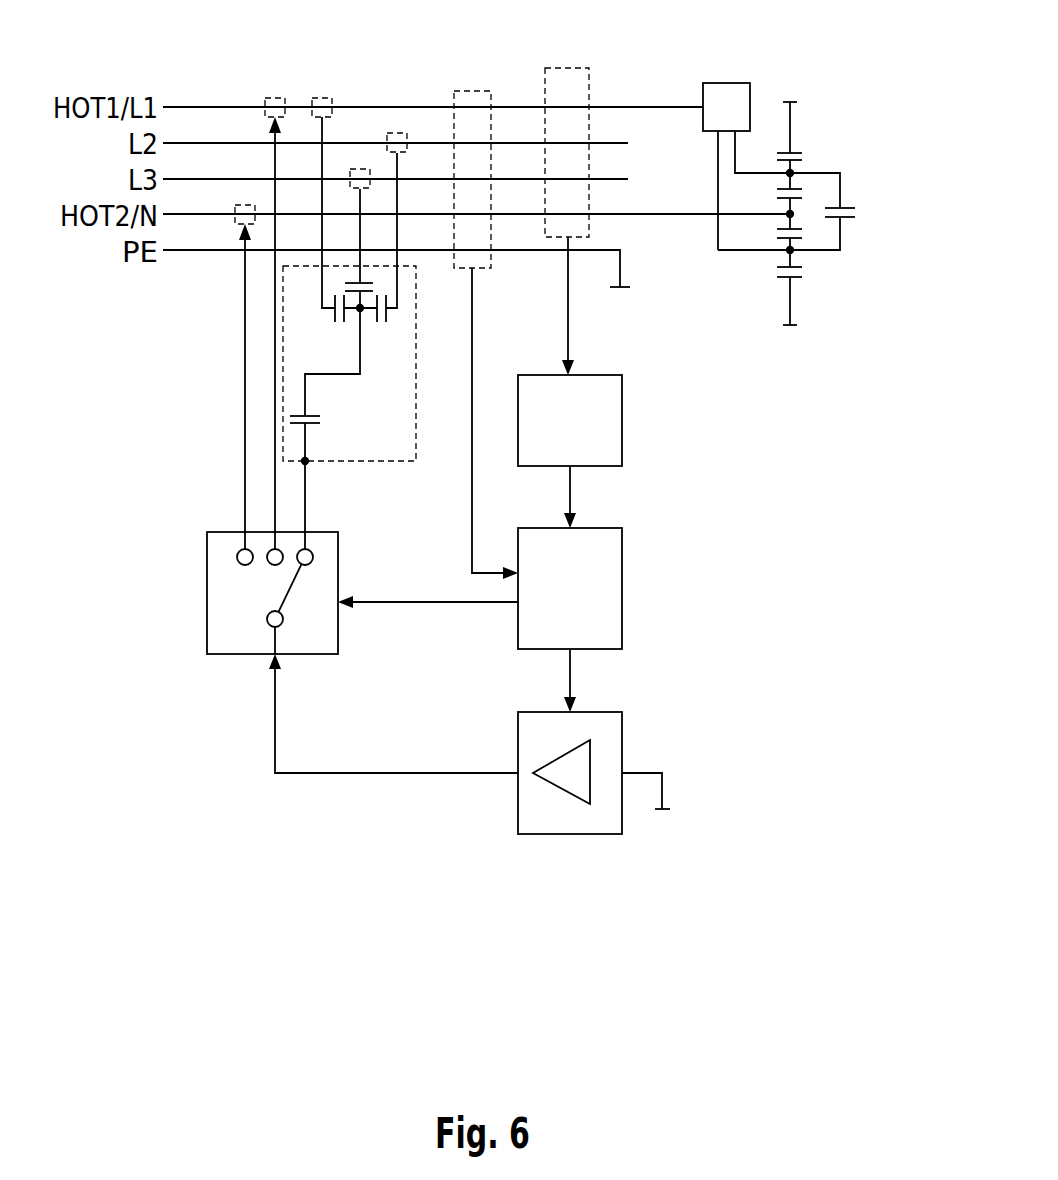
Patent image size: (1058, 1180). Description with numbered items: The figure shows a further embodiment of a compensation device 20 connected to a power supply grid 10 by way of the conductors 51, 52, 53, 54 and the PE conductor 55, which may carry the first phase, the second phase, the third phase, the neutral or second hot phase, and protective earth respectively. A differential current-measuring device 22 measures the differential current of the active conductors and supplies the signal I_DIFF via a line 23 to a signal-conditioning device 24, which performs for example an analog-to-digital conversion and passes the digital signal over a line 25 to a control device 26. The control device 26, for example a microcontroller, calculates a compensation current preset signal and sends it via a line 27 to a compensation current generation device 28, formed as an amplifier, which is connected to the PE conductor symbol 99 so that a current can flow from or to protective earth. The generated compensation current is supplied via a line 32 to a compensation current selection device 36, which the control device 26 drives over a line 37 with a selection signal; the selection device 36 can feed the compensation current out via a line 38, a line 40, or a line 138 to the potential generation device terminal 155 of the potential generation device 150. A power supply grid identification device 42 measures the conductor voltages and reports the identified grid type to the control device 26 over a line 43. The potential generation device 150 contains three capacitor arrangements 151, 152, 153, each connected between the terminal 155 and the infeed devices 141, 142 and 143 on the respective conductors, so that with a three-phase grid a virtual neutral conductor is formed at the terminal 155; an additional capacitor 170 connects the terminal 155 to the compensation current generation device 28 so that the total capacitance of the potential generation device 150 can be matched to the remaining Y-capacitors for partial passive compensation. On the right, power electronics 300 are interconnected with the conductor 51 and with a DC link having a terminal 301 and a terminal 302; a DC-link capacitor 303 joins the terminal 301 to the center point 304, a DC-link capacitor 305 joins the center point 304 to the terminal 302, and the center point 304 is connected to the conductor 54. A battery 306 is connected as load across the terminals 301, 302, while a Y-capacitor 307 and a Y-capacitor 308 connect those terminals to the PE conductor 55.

The power supply grid 10 is at (105, 75).
The compensation device 20 is at (190, 715).
The differential current-measuring device 22 is at (563, 68).
The line 23 is at (568, 335).
The signal-conditioning device 24 is at (622, 418).
The line 25 is at (570, 498).
The control device 26 is at (622, 588).
The line 27 is at (570, 688).
The compensation current generation device 28 is at (622, 740).
The line 32 is at (413, 776).
The compensation current selection device 36 is at (338, 562).
The line 37 is at (448, 603).
The line 38 is at (245, 415).
The line 40 is at (275, 467).
The power supply grid identification device 42 is at (486, 90).
The line 43 is at (472, 362).
The conductor 51 is at (603, 107).
The conductor 52 is at (603, 143).
The conductor 53 is at (603, 179).
The conductor 54 is at (603, 214).
The PE conductor 55 is at (603, 250).
The PE conductor symbol 99 is at (792, 102).
The line 138 is at (305, 510).
The infeed device 141 is at (318, 97).
The infeed device 142 is at (402, 133).
The infeed device 143 is at (363, 167).
The potential generation device 150 is at (340, 462).
The capacitor arrangement 151 is at (335, 308).
The capacitor arrangement 152 is at (387, 315).
The capacitor arrangement 153 is at (373, 283).
The potential generation device terminal 155 is at (365, 312).
The capacitor 170 is at (320, 416).
The power electronics 300 is at (727, 83).
The terminal 301 is at (795, 172).
The terminal 302 is at (800, 267).
The DC-link capacitor 303 is at (800, 188).
The center point 304 is at (790, 215).
The DC-link capacitor 305 is at (800, 230).
The battery 306 is at (850, 210).
The Y-capacitor 307 is at (800, 153).
The Y-capacitor 308 is at (793, 283).